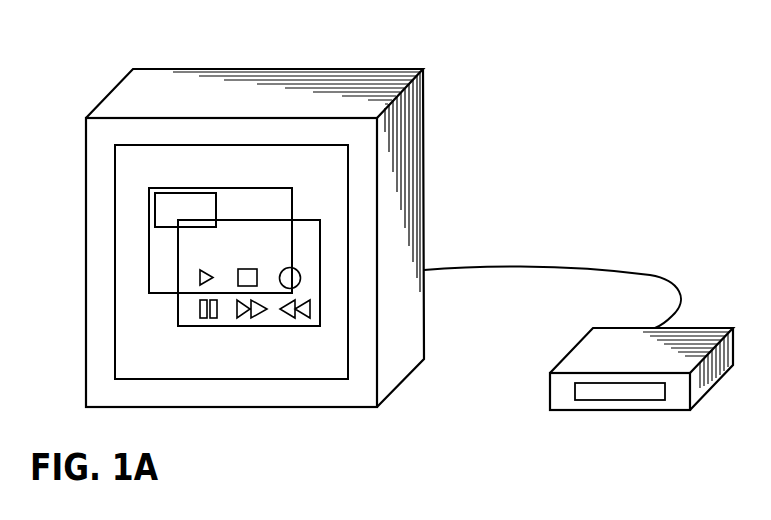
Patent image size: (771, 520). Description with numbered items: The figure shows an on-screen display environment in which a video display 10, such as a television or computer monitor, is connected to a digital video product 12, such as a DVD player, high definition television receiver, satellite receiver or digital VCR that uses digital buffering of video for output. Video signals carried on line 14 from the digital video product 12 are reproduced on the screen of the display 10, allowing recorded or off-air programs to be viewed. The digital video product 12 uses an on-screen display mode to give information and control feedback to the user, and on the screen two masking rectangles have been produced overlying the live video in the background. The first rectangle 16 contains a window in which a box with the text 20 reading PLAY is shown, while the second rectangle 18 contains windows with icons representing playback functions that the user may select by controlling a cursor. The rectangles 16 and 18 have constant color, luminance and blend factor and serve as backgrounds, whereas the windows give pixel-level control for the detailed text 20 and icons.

The video display 10 is at (329, 68).
The digital video product 12 is at (640, 359).
The line 14 is at (515, 266).
The first rectangle 16 is at (245, 197).
The second rectangle 18 is at (207, 326).
The text 20 is at (171, 193).